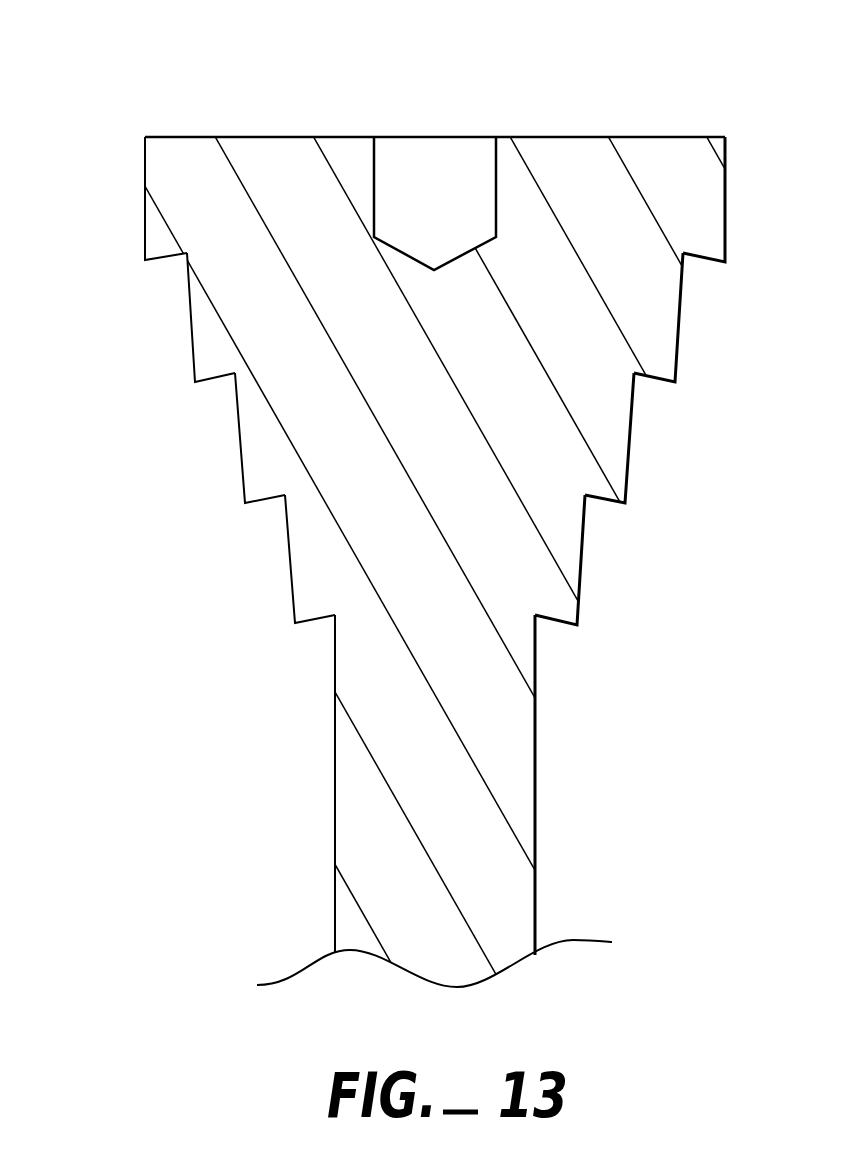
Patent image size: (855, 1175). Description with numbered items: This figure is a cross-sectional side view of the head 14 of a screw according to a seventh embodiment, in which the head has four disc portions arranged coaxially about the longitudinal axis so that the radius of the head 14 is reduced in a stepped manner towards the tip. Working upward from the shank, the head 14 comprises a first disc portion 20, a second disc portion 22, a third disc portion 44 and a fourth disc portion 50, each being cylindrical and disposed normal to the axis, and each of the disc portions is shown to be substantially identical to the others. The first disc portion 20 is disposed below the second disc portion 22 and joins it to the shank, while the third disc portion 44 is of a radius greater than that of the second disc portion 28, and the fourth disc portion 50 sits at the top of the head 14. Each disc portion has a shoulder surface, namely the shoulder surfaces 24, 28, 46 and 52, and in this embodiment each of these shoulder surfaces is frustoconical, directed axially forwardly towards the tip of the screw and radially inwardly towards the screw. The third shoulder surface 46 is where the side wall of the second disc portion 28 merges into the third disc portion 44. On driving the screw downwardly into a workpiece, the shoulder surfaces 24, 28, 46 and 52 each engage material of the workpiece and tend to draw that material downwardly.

The head 14 is at (172, 56).
The fourth disc portion 50 is at (109, 204).
The third disc portion 44 is at (148, 338).
The second disc portion 22 is at (198, 449).
The first disc portion 20 is at (239, 571).
The shoulder surface 52 is at (702, 262).
The third shoulder surface 46 is at (652, 380).
The second disc portion 28 is at (605, 503).
The shoulder surface 24 is at (553, 620).